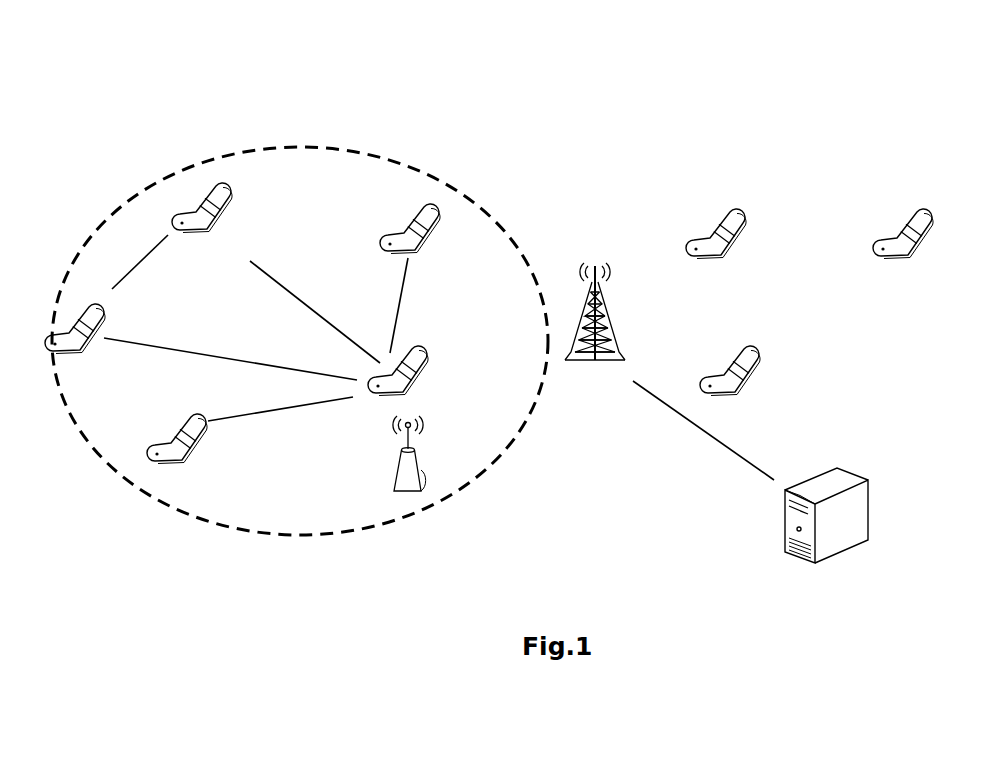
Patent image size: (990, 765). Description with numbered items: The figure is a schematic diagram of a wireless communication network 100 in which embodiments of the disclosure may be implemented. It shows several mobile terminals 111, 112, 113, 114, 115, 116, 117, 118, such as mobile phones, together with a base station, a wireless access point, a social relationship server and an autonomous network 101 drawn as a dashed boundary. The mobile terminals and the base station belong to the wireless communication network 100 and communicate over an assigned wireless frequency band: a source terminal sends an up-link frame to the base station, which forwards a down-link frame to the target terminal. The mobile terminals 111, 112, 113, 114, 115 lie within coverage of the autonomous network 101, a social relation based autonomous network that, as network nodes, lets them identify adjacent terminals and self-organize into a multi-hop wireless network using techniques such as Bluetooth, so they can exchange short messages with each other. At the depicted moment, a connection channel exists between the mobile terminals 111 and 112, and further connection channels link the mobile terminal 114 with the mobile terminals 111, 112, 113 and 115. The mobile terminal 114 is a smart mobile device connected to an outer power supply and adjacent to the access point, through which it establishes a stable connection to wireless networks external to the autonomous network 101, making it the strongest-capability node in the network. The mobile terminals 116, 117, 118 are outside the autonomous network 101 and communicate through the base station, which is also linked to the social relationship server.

The wireless communication network 100 is at (87, 132).
The autonomous network 101 is at (300, 358).
The mobile terminal 111 is at (218, 211).
The mobile terminal 112 is at (74, 345).
The mobile terminal 113 is at (178, 456).
The mobile terminal 114 is at (414, 375).
The mobile terminal 115 is at (424, 238).
The mobile terminal 116 is at (730, 242).
The mobile terminal 117 is at (915, 243).
The mobile terminal 118 is at (745, 376).